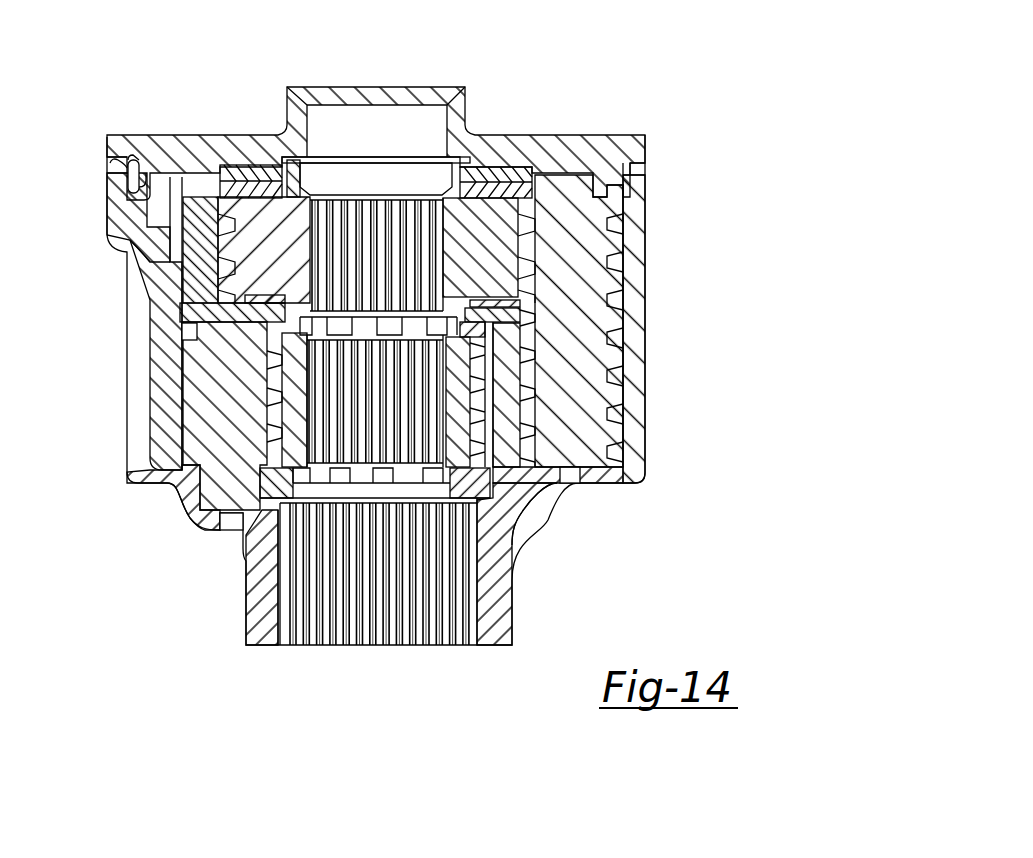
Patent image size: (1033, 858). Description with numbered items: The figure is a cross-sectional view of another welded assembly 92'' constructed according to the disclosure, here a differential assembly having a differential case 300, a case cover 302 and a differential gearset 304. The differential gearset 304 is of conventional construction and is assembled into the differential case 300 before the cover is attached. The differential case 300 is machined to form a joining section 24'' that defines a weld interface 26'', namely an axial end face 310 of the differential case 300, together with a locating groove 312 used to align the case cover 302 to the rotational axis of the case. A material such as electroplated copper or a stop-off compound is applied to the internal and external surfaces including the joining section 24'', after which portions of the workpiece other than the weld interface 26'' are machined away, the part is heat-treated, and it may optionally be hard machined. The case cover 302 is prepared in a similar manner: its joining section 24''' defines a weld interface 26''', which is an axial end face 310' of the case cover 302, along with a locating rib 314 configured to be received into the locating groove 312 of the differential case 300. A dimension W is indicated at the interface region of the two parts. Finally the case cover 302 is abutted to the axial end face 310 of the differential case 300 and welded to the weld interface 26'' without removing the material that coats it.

The differential case 300 is at (160, 397).
The case cover 302 is at (195, 148).
The differential gearset 304 is at (586, 305).
The welded assembly 92'' is at (420, 346).
The joining section 24''' is at (86, 114).
The locating rib 314 is at (145, 186).
The axial end face 310' is at (71, 151).
The joining section 24'' is at (68, 198).
The axial end face 310 is at (90, 216).
The locating groove 312 is at (148, 242).
The weld interface 26''' is at (685, 125).
The gap width W is at (640, 160).
The weld interface 26'' is at (681, 204).